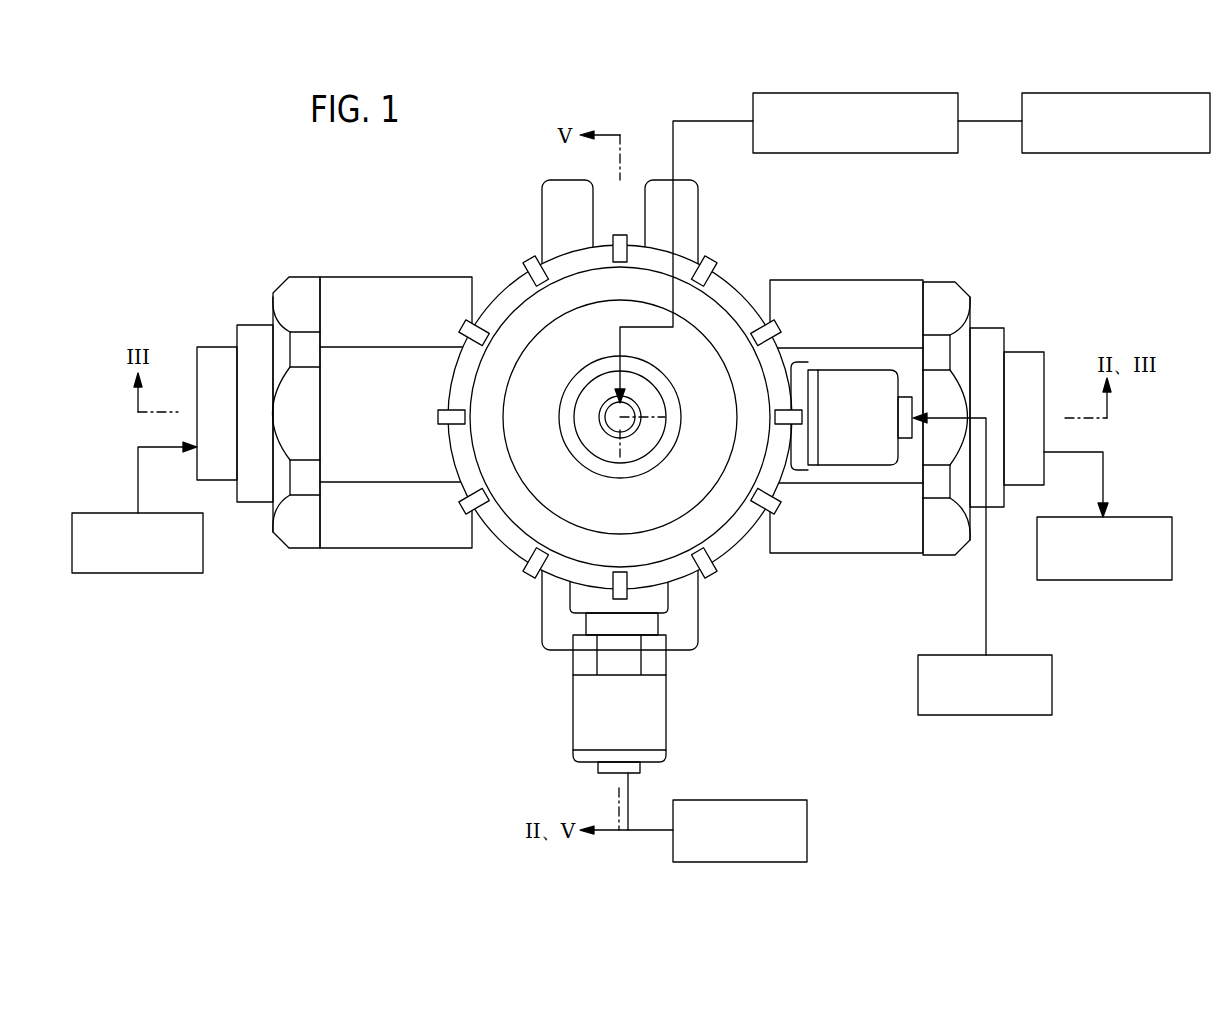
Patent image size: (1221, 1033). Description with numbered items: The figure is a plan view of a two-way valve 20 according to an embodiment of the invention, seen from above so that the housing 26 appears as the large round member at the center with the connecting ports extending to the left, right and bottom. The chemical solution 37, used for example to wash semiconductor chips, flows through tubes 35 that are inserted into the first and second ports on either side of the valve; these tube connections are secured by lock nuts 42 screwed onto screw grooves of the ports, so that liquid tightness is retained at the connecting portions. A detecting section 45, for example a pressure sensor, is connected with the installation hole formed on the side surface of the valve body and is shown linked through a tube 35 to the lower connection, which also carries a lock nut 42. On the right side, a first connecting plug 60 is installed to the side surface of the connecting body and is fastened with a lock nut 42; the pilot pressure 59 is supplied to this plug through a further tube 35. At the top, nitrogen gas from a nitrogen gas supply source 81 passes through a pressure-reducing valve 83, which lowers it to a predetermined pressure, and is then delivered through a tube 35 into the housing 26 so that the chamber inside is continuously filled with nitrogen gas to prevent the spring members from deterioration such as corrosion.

The two-way valve 20 is at (821, 203).
The housing 26 is at (517, 525).
The tube 35 is at (737, 121).
The chemical solution 37 is at (103, 513).
The lock nut 42 is at (845, 290).
The detecting section 45 is at (788, 800).
The pilot pressure 59 is at (1023, 655).
The first connecting plug 60 is at (797, 371).
The nitrogen gas supply source 81 is at (1192, 93).
The pressure-reducing valve 83 is at (942, 93).